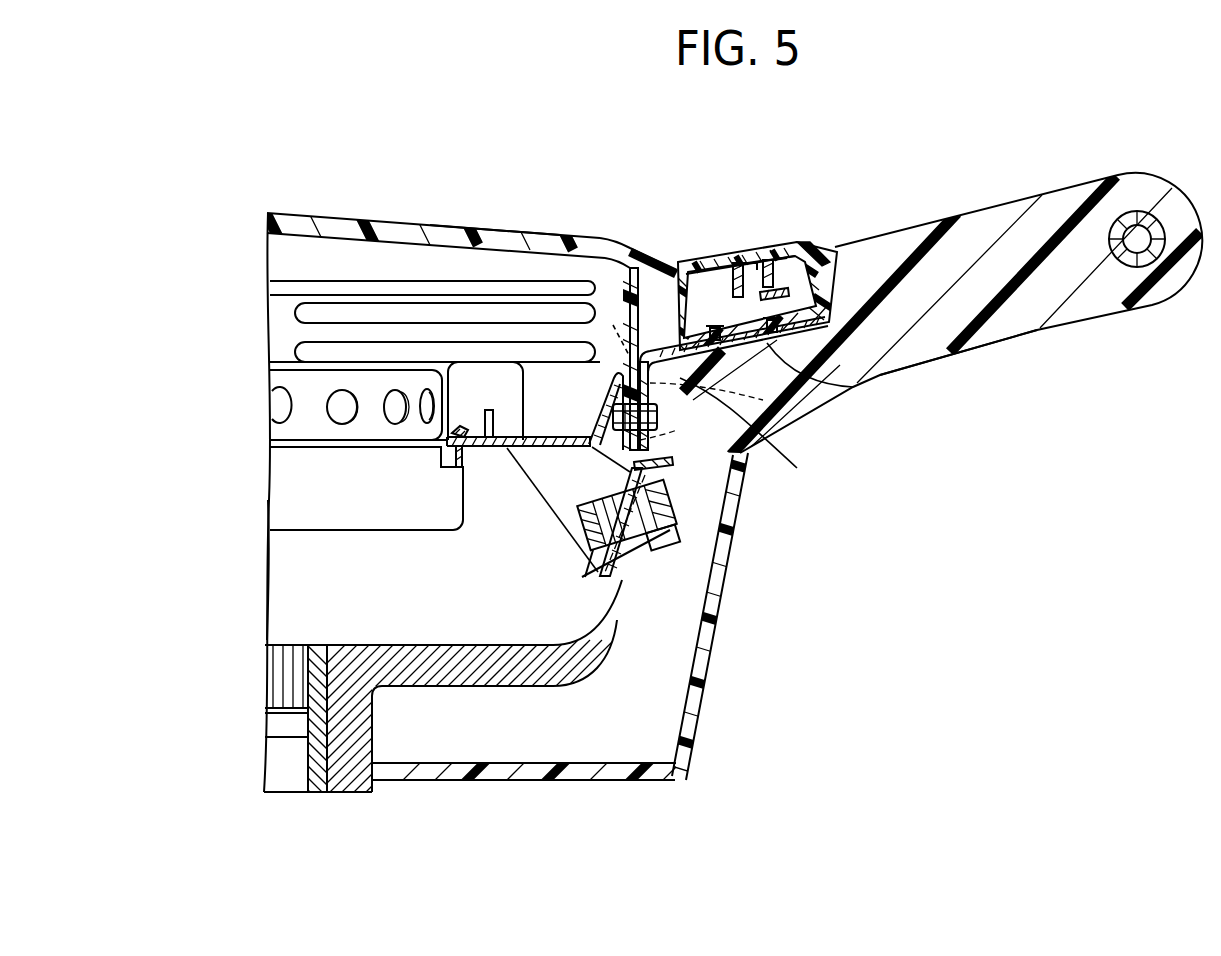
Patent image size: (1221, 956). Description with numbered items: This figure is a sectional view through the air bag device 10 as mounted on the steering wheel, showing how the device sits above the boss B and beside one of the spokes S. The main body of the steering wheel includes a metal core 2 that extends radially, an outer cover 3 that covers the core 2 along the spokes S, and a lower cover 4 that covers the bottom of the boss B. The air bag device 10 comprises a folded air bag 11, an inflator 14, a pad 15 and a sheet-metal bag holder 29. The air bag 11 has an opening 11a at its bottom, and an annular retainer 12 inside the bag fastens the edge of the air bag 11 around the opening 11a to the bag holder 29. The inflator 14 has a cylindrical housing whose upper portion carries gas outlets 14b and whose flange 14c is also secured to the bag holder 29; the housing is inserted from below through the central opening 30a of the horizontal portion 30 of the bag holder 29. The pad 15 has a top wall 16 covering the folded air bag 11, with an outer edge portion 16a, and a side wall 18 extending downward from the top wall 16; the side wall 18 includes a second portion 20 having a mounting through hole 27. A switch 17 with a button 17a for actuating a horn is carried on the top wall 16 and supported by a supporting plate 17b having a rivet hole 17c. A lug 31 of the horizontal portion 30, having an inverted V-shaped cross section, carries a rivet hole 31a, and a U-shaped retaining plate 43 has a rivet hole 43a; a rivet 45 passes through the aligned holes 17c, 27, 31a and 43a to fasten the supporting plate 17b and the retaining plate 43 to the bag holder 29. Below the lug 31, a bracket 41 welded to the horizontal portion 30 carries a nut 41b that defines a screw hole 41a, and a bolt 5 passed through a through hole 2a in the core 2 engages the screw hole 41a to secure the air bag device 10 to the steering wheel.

The core 2 is at (407, 657).
The through hole 2a is at (668, 560).
The outer cover 3 is at (970, 225).
The lower cover 4 is at (458, 773).
The bolt 5 is at (650, 560).
The air bag device 10 is at (245, 532).
The air bag 11 is at (290, 282).
The opening 11a is at (437, 428).
The annular retainer 12 is at (486, 418).
The inflator 14 is at (277, 471).
The gas outlets 14b is at (283, 402).
The flange 14c is at (458, 468).
The pad 15 is at (517, 213).
The top wall 16 is at (425, 230).
The outer edge portion 16a is at (626, 262).
The switch 17 is at (803, 229).
The button 17a is at (722, 262).
The supporting plate 17b is at (853, 387).
The rivet hole 17c is at (800, 417).
The side wall 18 is at (634, 268).
The second portion 20 is at (633, 346).
The mounting through hole 27 is at (611, 324).
The bag holder 29 is at (479, 465).
The horizontal portion 30 is at (500, 452).
The central opening 30a is at (438, 445).
The lug 31 is at (608, 378).
The rivet hole 31a is at (600, 443).
The bracket 41 is at (645, 482).
The screw hole 41a is at (593, 568).
The nut 41b is at (597, 605).
The retaining plate 43 is at (720, 455).
The rivet hole 43a is at (701, 411).
The rivet 45 is at (660, 410).
The spoke S is at (983, 360).
The boss B is at (556, 791).